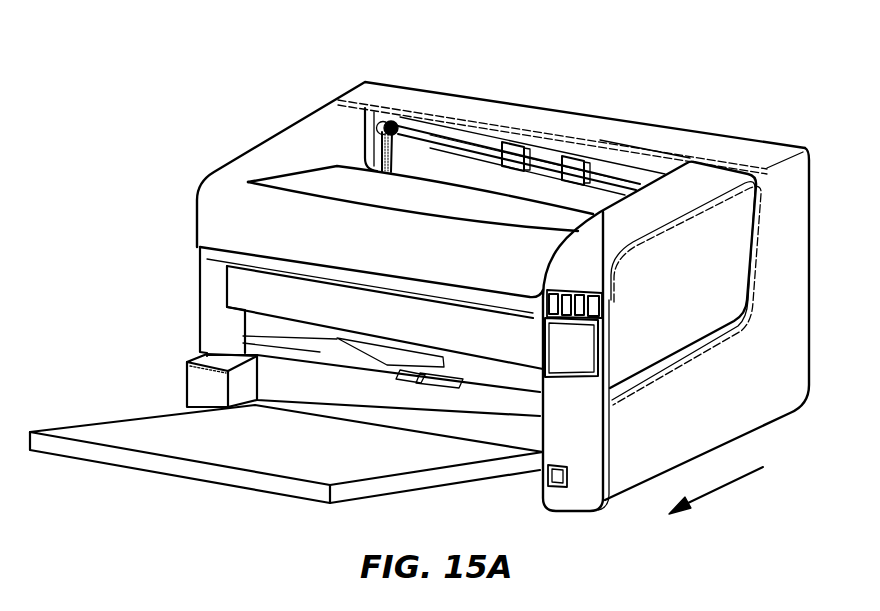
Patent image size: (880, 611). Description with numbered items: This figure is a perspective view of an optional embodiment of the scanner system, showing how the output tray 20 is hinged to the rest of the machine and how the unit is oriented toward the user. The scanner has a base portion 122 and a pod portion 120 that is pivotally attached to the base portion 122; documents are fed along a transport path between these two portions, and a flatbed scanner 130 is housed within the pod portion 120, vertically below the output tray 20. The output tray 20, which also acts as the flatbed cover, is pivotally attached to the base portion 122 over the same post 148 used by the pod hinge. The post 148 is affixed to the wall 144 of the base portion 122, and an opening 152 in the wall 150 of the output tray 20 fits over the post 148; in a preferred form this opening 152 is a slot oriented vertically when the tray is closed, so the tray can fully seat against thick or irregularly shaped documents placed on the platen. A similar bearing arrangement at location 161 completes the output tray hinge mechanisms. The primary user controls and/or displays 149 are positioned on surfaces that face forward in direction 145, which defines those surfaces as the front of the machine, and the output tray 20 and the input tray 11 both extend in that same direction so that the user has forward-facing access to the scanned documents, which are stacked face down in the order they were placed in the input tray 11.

The output tray 20 is at (264, 140).
The base portion 122 is at (375, 82).
The wall 144 is at (367, 113).
The wall 150 is at (398, 122).
The opening 152 is at (400, 125).
The post 148 is at (408, 126).
The location 161 is at (641, 157).
The pod portion 120 is at (200, 277).
The flatbed scanner 130 is at (240, 287).
The input tray 11 is at (262, 480).
The primary user controls and/or displays 149 is at (594, 307).
The direction 145 is at (728, 485).